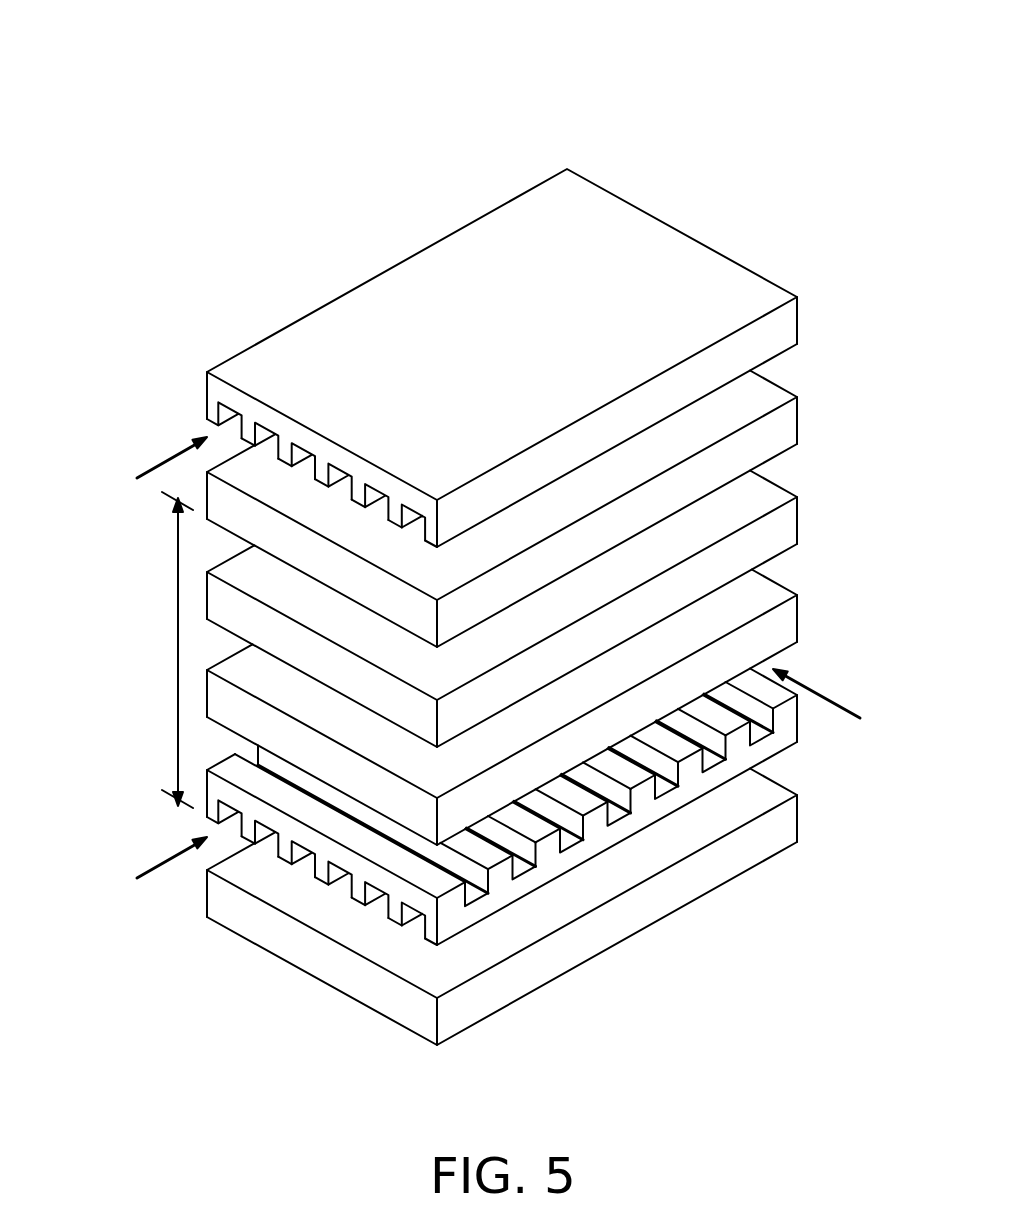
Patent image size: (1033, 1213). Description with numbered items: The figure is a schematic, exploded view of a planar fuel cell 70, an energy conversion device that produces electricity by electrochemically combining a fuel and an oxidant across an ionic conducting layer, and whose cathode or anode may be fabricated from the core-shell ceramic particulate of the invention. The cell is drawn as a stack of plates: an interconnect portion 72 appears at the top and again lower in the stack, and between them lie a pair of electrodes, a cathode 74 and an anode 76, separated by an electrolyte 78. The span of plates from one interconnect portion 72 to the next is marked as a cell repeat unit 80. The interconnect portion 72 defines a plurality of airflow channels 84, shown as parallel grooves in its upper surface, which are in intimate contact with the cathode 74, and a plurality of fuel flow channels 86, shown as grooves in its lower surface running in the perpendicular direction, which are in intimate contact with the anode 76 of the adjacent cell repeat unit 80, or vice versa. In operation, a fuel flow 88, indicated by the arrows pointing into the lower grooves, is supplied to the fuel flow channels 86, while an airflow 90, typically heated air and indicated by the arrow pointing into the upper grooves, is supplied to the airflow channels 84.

The planar fuel cell 70 is at (166, 84).
The interconnect portion 72 is at (549, 580).
The cathode 74 is at (800, 609).
The anode 76 is at (800, 408).
The electrolyte 78 is at (800, 510).
The cell repeat unit 80 is at (175, 652).
The airflow channels 84 is at (766, 728).
The fuel flow channels 86 is at (229, 808).
The fuel flow 88 is at (146, 452).
The airflow 90 is at (838, 703).